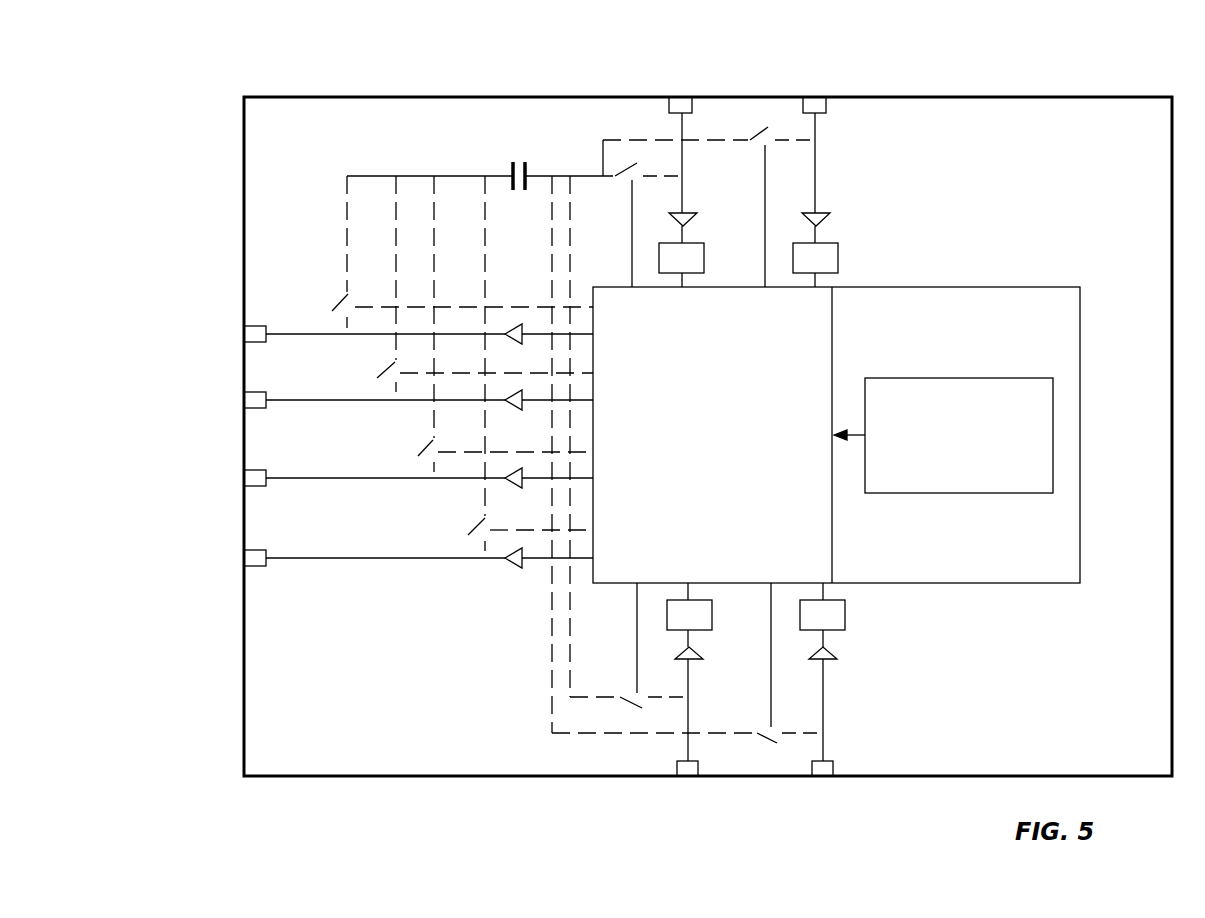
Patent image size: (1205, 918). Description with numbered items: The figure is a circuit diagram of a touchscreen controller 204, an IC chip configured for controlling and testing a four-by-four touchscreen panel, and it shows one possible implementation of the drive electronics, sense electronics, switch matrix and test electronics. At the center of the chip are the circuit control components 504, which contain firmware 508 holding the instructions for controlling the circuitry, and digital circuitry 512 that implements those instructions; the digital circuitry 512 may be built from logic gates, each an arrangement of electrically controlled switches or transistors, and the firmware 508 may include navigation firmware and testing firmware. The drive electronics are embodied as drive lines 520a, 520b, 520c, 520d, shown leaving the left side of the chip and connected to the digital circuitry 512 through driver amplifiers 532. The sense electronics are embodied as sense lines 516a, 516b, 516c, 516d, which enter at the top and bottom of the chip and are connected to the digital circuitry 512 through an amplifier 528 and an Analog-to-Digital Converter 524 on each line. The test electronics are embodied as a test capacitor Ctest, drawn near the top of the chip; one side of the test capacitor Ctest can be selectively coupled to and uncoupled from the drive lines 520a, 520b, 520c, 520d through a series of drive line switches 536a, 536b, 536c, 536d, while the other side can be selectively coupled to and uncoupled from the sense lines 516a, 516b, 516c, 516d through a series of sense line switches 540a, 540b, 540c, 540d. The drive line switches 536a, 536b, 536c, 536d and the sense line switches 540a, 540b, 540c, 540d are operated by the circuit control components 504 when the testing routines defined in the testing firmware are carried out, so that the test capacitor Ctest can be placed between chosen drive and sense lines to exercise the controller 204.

The controller 204 is at (708, 409).
The circuit control components 504 is at (836, 402).
The digital circuitry 512 is at (778, 435).
The firmware 508 is at (943, 411).
The drive line 520a is at (209, 331).
The drive line 520b is at (209, 397).
The drive line 520c is at (209, 480).
The drive line 520d is at (209, 560).
The driver amplifiers 532 is at (498, 471).
The drive line switch 536a is at (320, 285).
The drive line switch 536b is at (364, 369).
The drive line switch 536c is at (403, 444).
The drive line switch 536d is at (449, 522).
The sense line 516a is at (834, 75).
The sense line 516b is at (698, 75).
The sense line 516c is at (842, 797).
The sense line 516d is at (707, 797).
The Analog-to-Digital Converter 524 is at (864, 618).
The amplifier 528 is at (869, 657).
The sense line switch 540a is at (767, 108).
The sense line switch 540b is at (620, 147).
The sense line switch 540c is at (777, 764).
The sense line switch 540d is at (637, 724).
The test capacitor Ctest is at (480, 148).